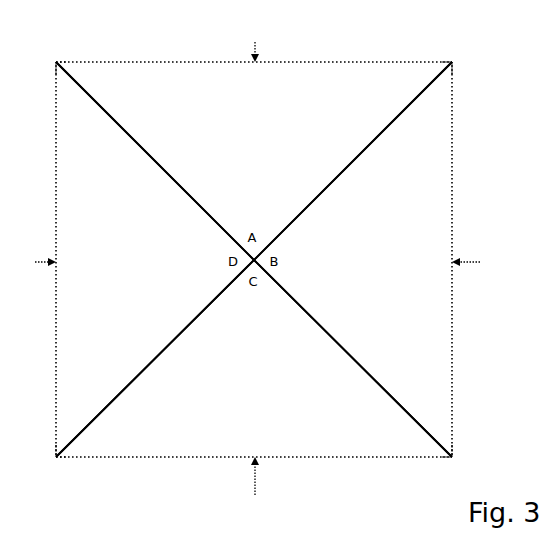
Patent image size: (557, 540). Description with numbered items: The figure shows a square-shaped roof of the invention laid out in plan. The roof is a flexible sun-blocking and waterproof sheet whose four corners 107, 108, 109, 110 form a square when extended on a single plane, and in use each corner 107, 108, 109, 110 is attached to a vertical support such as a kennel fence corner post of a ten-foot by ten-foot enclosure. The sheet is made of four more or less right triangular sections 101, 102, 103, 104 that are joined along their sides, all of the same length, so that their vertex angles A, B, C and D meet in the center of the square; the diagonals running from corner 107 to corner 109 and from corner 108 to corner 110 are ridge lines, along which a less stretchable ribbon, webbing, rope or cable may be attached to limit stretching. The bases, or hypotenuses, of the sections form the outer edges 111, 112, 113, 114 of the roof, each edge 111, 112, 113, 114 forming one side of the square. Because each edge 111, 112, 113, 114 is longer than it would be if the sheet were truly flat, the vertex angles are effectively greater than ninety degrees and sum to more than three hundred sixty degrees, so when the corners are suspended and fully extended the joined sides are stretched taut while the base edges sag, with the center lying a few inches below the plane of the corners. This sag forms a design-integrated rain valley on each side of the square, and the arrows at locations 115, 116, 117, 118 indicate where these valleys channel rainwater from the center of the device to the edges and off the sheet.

The triangular section 101 is at (254, 161).
The triangular section 102 is at (353, 259).
The triangular section 103 is at (254, 358).
The triangular section 104 is at (155, 259).
The corner 107 is at (460, 59).
The corner 108 is at (460, 462).
The corner 109 is at (47, 462).
The corner 110 is at (47, 59).
The edge 111 is at (453, 315).
The edge 112 is at (138, 457).
The edge 113 is at (55, 150).
The edge 114 is at (384, 62).
The rainwater discharge location 115 is at (481, 262).
The rainwater discharge location 116 is at (30, 262).
The rainwater discharge location 117 is at (255, 484).
The rainwater discharge location 118 is at (255, 41).